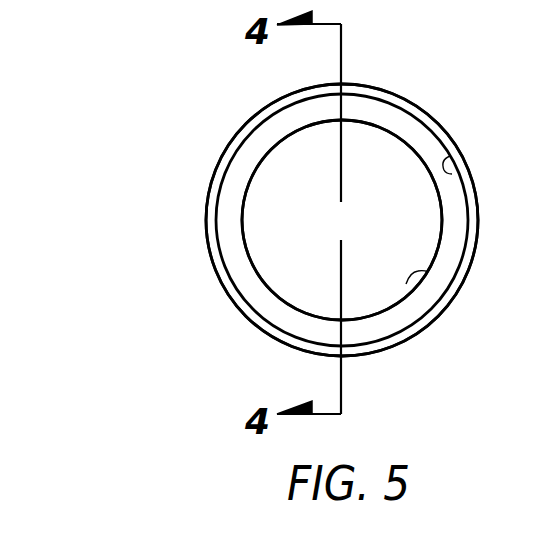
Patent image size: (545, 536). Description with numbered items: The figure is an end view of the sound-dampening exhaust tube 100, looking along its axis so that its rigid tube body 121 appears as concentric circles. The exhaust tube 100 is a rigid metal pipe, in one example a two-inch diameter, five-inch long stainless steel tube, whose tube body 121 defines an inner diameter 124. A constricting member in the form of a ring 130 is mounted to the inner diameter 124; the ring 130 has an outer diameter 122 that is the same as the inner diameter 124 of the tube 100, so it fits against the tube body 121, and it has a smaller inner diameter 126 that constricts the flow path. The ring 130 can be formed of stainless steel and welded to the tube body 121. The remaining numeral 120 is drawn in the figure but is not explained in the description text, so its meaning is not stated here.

The exhaust tube 100 is at (207, 213).
The tube body 121 is at (382, 85).
The outer diameter of ring 122 is at (436, 131).
The inner diameter of tube 124 is at (447, 176).
The inner diameter of ring 126 is at (422, 271).
The inner wall 120 is at (442, 305).
The ring 130 is at (397, 323).